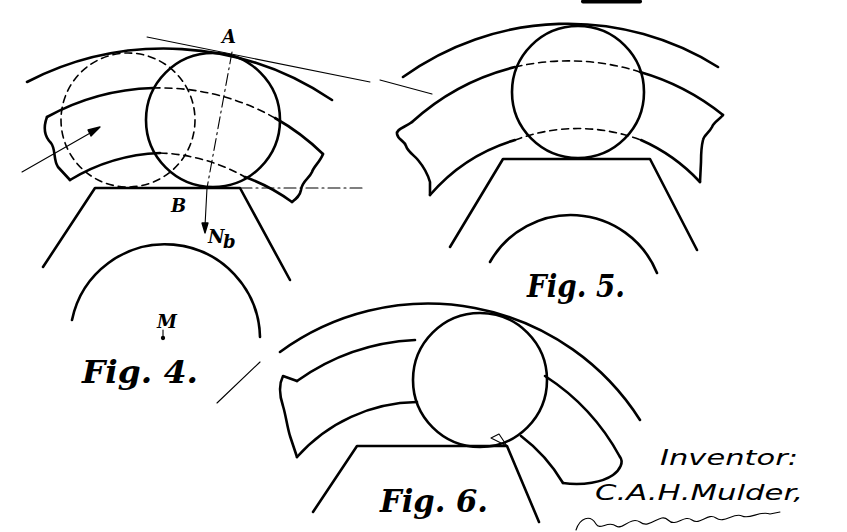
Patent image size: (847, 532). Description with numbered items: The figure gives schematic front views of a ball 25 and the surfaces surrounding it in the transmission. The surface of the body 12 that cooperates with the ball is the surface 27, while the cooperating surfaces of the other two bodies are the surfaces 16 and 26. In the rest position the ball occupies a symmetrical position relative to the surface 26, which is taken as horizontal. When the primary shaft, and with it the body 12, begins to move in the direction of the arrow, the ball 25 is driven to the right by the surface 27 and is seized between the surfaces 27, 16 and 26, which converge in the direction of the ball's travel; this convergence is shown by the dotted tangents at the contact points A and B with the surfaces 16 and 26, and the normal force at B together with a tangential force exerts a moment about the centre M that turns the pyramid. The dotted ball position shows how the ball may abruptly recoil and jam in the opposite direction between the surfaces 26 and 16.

In FIG. 4, the surface of body 15 16 is at (64, 62).
In FIG. 5, the surface of body 15 16 is at (691, 51).
In FIG. 6, the surface of body 15 16 is at (616, 385).
In FIG. 4, the body 12 is at (298, 134).
In FIG. 5, the body 12 is at (406, 119).
In FIG. 6, the body 12 is at (280, 376).
In FIG. 4, the ball 25 is at (180, 108).
In FIG. 4, the surface of body 14 26 is at (102, 179).
In FIG. 5, the surface of body 14 26 is at (656, 166).
In FIG. 6, the surface of body 14 26 is at (348, 438).
In FIG. 4, the surface of body 12 27 is at (307, 157).
In FIG. 5, the surface of body 12 27 is at (426, 151).
In FIG. 6, the surface of body 12 27 is at (305, 427).